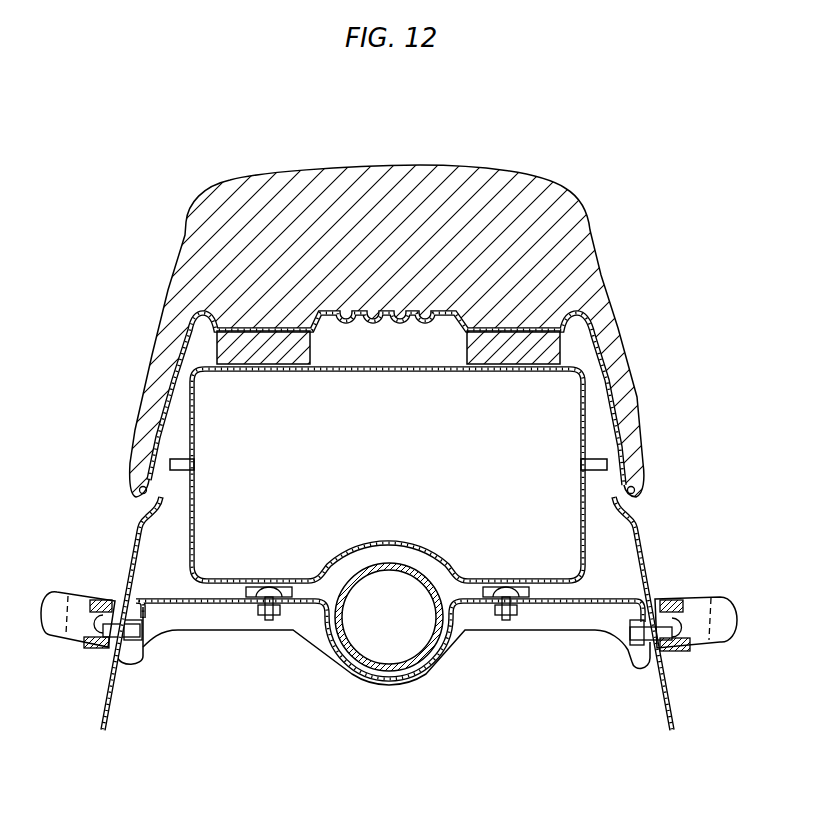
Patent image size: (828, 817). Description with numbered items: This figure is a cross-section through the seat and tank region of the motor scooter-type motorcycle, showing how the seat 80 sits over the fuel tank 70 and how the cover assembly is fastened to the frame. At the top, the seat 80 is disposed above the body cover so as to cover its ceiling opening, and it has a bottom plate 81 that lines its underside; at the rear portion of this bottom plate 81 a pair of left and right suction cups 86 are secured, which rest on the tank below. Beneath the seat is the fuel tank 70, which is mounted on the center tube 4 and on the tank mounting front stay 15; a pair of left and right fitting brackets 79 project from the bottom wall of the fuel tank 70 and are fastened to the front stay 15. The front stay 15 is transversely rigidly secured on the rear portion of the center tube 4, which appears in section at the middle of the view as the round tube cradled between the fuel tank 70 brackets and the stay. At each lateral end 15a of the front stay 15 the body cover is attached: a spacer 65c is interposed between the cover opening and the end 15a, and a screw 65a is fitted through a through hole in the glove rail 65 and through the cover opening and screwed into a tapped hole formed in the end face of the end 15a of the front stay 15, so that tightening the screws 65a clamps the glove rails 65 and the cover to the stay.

The seat 80 is at (481, 190).
The bottom plate 81 is at (193, 320).
The suction cup 86 is at (497, 360).
The fuel tank 70 is at (196, 515).
The front stay 15 is at (236, 620).
The fitting bracket 79 is at (530, 592).
The center tube 4 is at (400, 675).
The glove rail 65 is at (718, 606).
The screw 65a is at (690, 632).
The spacer 65c is at (665, 660).
The end of front stay 15a is at (647, 662).